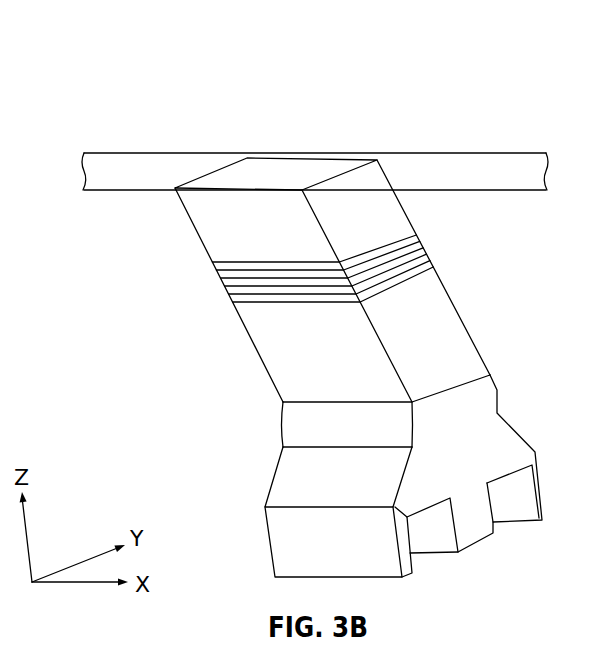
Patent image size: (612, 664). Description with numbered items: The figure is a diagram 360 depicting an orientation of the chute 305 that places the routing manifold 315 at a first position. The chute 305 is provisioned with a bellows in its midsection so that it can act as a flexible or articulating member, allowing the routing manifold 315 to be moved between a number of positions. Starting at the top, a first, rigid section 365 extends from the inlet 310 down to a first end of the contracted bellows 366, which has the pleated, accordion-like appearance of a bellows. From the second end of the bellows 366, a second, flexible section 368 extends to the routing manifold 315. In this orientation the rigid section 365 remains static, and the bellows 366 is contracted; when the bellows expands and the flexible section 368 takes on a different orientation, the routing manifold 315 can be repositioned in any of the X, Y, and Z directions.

The diagram 360 is at (467, 97).
The first, rigid section 365 is at (410, 196).
The chute 305 is at (175, 244).
The inlet 310 is at (282, 190).
The contracted bellows 366 is at (432, 243).
The second, flexible section 368 is at (453, 307).
The routing manifold 315 is at (498, 393).